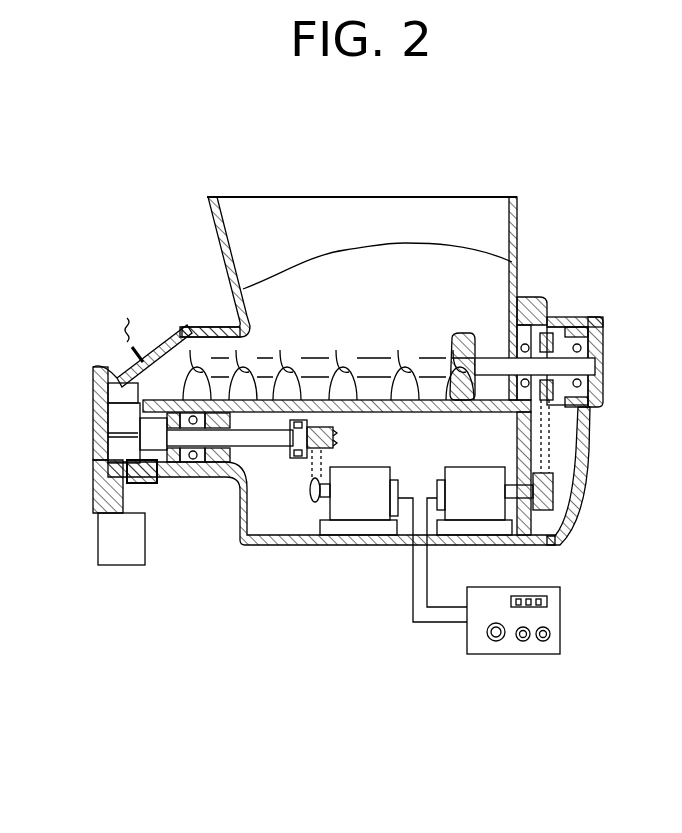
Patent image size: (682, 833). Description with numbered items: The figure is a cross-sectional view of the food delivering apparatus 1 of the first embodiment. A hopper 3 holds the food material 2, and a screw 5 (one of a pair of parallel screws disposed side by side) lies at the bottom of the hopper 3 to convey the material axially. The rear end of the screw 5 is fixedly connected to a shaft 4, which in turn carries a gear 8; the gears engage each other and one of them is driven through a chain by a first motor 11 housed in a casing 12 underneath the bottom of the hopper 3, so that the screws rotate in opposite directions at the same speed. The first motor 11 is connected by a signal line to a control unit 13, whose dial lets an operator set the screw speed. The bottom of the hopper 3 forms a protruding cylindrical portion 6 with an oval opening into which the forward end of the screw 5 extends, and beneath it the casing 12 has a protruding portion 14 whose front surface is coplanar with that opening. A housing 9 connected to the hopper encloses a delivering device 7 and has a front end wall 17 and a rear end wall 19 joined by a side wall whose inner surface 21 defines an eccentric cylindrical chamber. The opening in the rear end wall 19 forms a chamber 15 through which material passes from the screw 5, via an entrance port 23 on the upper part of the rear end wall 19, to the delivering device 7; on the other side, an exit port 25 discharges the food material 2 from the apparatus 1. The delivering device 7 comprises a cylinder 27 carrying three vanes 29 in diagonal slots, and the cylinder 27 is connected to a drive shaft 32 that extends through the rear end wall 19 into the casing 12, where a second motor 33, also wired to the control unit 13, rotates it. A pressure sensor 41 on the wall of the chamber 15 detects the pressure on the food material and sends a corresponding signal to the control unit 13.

The apparatus 1 is at (482, 172).
The food material 2 is at (404, 247).
The hopper 3 is at (518, 200).
The shaft 4 is at (603, 366).
The screw 5 is at (465, 337).
The protruding cylindrical portion 6 is at (212, 326).
The delivering device 7 is at (98, 468).
The gear 8 is at (555, 318).
The housing 9 is at (97, 370).
The first motor 11 is at (480, 508).
The casing 12 is at (270, 548).
The control unit 13 is at (561, 620).
The protruding portion 14 is at (182, 472).
The chamber 15 is at (143, 400).
The front end wall 17 is at (96, 425).
The rear end wall 19 is at (132, 465).
The inner surface 21 is at (129, 466).
The entrance port 23 is at (172, 372).
The exit port 25 is at (127, 568).
The cylinder 27 is at (118, 443).
The vane 29 is at (115, 393).
The drive shaft 32 is at (232, 466).
The second motor 33 is at (356, 503).
The pressure sensor 41 is at (133, 350).